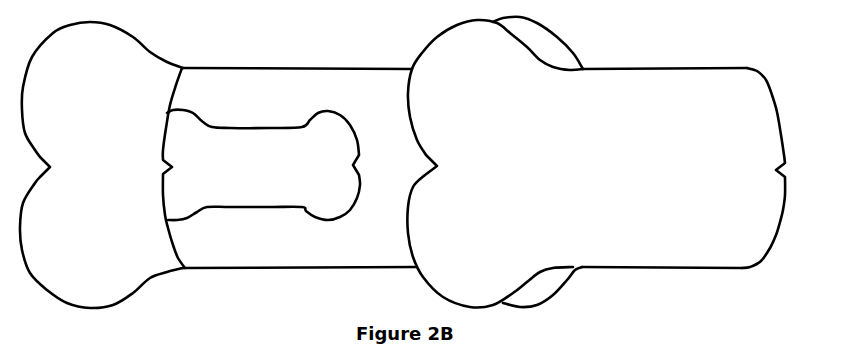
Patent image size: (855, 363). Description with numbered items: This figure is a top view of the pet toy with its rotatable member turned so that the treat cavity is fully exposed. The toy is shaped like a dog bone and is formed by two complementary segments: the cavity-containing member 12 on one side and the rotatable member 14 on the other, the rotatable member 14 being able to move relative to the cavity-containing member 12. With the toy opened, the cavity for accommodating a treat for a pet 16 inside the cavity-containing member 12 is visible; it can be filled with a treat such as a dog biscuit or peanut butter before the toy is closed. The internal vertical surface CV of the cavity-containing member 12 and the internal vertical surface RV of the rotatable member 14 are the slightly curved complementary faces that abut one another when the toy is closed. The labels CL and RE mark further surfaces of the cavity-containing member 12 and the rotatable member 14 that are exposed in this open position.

The cavity-containing member 12 is at (101, 165).
The rotatable member 14 is at (495, 162).
The cavity for accommodating a treat for a pet 16 is at (263, 165).
The internal vertical surface of the cavity-containing member CV is at (172, 97).
The cap length CL is at (288, 252).
The end radius RE is at (658, 95).
The internal vertical surface of the rotatable member RV is at (777, 229).